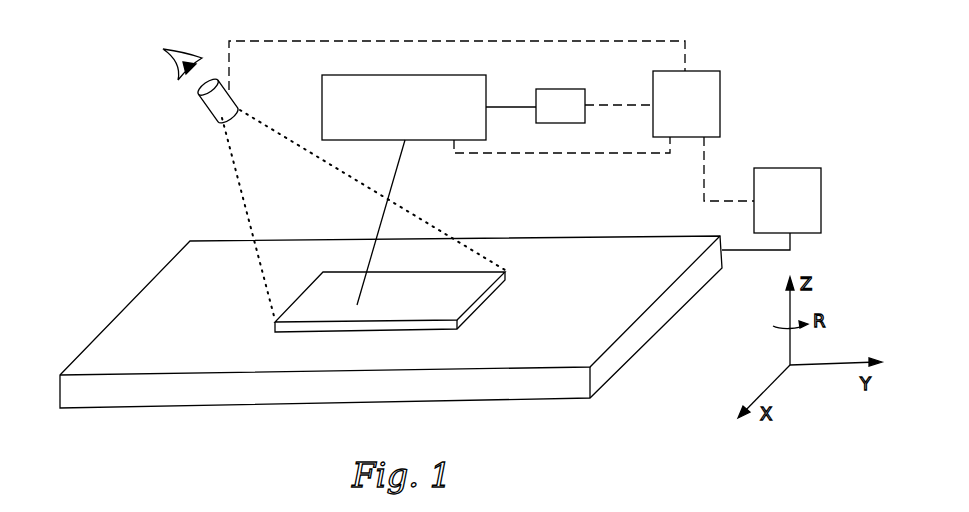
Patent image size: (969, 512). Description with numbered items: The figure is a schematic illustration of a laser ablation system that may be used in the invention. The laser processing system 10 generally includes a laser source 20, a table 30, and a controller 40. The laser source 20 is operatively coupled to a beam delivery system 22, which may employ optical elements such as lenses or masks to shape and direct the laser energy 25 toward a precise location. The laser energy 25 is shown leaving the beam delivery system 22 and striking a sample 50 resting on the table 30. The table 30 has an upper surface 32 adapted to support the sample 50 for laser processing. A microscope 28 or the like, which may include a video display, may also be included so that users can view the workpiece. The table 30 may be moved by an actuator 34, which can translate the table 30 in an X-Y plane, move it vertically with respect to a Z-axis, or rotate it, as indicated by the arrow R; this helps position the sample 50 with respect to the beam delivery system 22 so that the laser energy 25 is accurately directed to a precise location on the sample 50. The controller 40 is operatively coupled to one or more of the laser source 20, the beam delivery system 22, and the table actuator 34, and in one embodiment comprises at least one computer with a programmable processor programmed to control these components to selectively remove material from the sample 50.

The laser processing system 10 is at (137, 220).
The laser source 20 is at (550, 88).
The beam delivery system 22 is at (424, 75).
The laser energy 25 is at (393, 185).
The microscope 28 is at (204, 103).
The table 30 is at (123, 308).
The upper surface 32 is at (214, 309).
The actuator 34 is at (789, 168).
The controller 40 is at (720, 96).
The sample 50 is at (318, 310).